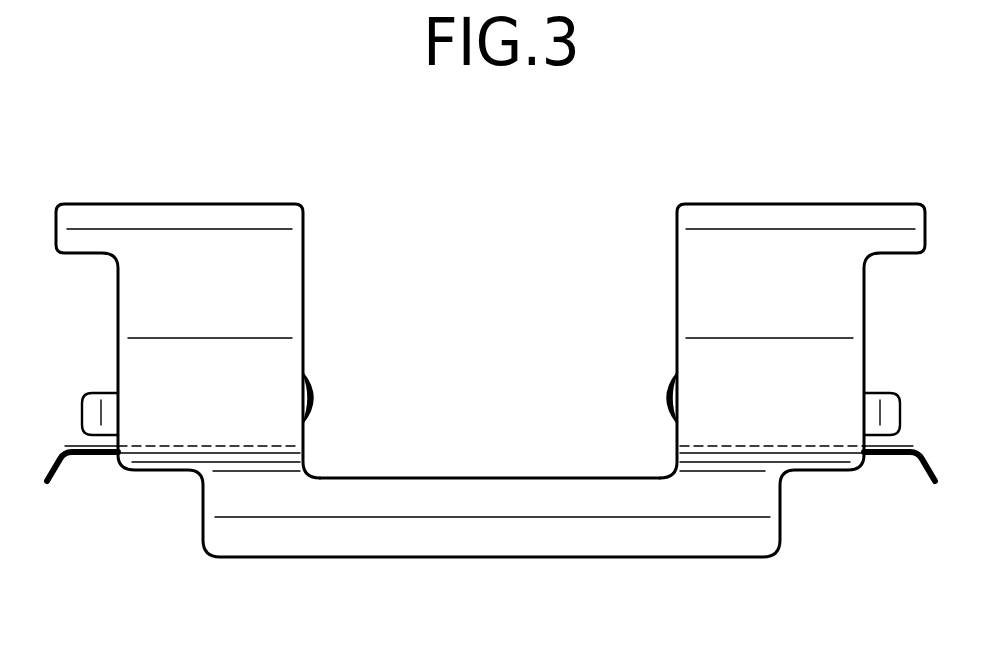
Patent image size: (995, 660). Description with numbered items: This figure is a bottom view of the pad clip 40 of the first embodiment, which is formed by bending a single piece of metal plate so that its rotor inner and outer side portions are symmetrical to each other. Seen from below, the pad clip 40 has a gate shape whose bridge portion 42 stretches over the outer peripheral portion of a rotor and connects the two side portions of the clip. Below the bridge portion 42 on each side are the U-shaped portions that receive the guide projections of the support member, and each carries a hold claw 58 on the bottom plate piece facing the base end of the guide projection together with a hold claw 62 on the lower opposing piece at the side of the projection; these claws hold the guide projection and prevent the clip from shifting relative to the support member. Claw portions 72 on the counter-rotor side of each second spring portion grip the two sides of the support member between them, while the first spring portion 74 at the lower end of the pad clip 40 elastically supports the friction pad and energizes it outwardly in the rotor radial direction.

The pad clip 40 is at (240, 184).
The bridge portion 42 is at (450, 558).
The hold claw 58 is at (313, 392).
The hold claw 62 is at (90, 392).
The claw portion 72 is at (63, 473).
The first spring portion 74 is at (290, 275).